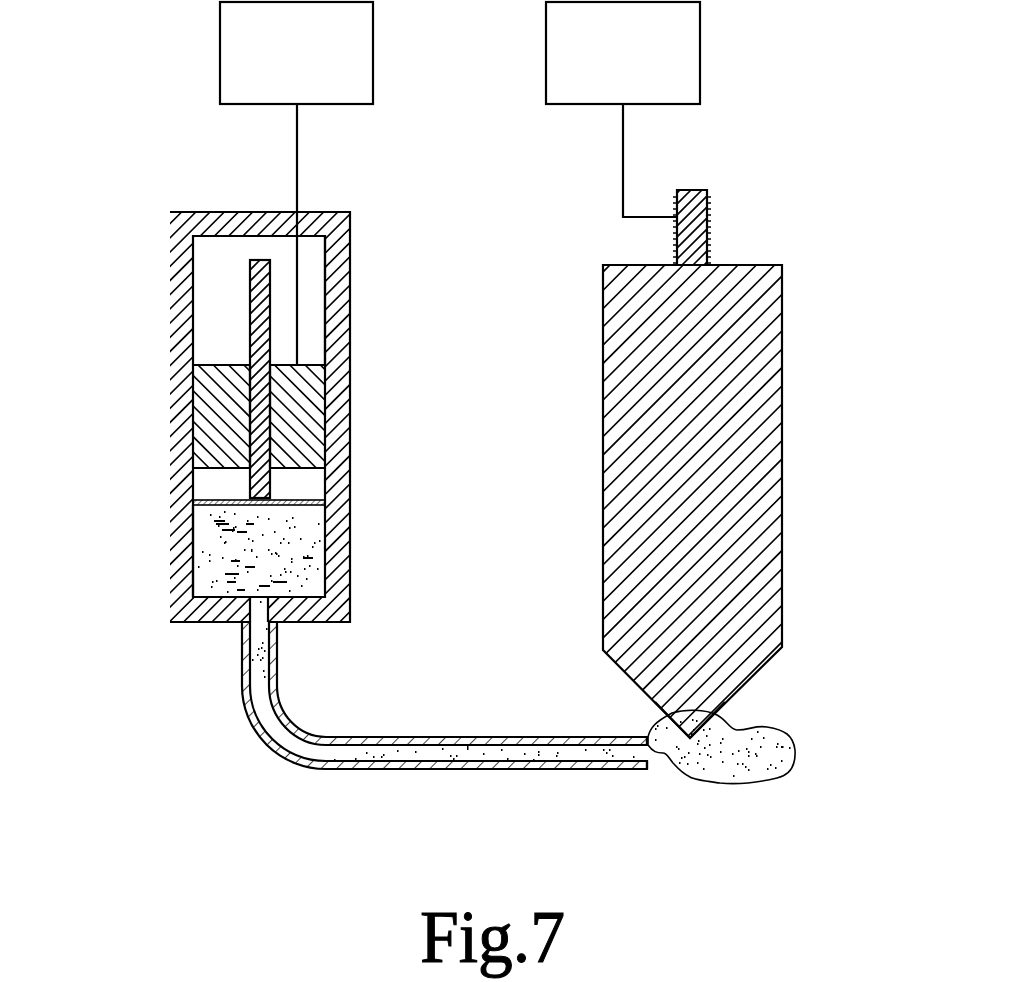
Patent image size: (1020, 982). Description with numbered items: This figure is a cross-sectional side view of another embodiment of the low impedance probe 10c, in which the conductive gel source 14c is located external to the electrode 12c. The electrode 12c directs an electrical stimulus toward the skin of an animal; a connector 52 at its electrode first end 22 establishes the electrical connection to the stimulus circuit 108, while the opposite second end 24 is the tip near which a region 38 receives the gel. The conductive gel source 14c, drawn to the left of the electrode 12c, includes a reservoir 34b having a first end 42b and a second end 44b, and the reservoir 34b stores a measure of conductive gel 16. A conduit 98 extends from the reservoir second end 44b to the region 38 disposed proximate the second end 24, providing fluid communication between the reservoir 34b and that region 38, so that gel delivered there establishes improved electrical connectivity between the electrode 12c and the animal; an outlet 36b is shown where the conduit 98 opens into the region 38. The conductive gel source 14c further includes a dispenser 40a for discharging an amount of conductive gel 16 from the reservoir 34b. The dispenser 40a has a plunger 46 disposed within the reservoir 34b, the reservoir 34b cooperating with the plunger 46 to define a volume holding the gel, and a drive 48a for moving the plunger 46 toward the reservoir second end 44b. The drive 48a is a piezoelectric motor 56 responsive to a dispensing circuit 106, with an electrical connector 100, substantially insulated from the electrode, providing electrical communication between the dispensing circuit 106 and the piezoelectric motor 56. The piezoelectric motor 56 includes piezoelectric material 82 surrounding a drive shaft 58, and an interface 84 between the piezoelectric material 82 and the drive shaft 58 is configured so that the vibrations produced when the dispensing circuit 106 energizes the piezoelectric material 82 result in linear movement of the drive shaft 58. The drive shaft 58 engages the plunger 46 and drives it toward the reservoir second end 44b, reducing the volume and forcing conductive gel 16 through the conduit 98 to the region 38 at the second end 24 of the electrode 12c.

The low impedance probe 10c is at (130, 42).
The dispensing circuit 106 is at (373, 50).
The stimulus circuit 108 is at (700, 52).
The electrical connector 100 is at (297, 150).
The conductive gel source 14c is at (375, 444).
The reservoir 34b is at (327, 516).
The second end 44b is at (193, 575).
The drive shaft 58 is at (270, 268).
The dispenser 40a is at (247, 288).
The interface 84 is at (215, 405).
The piezoelectric material 82 is at (223, 365).
The drive 48a is at (327, 398).
The piezoelectric motor 56 is at (303, 363).
The plunger 46 is at (195, 481).
The first end 42b is at (195, 503).
The conductive gel 16 is at (300, 561).
The conduit 98 is at (453, 719).
The tube outlet 36b is at (652, 765).
The electrode 12c is at (578, 421).
The connector 52 is at (673, 217).
The electrode first end 22 is at (782, 265).
The second end 24 is at (700, 722).
The region 38 is at (822, 742).